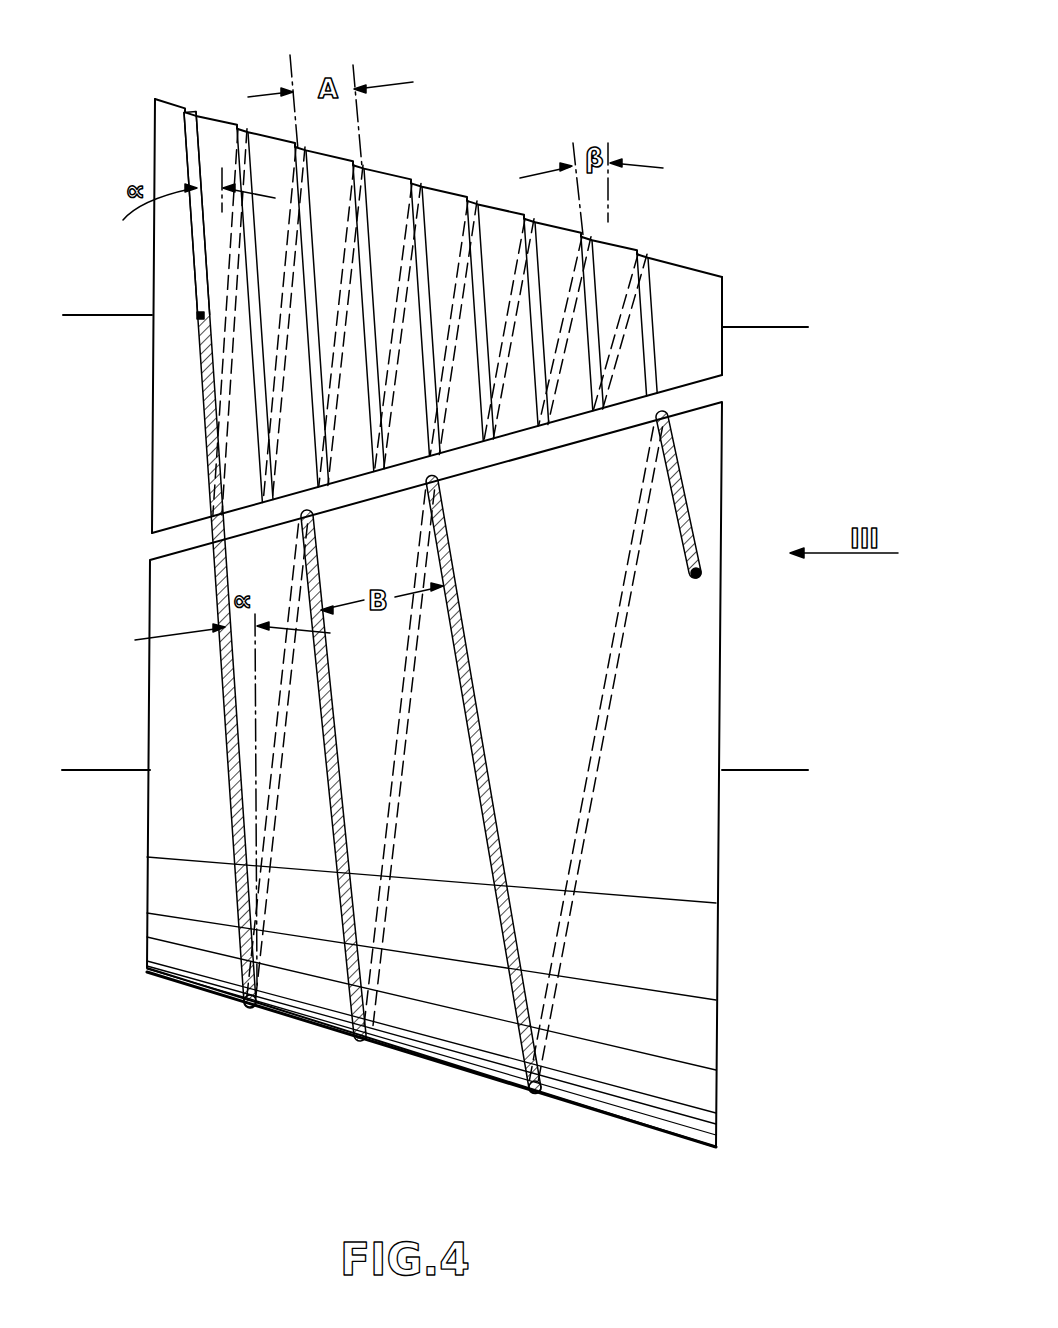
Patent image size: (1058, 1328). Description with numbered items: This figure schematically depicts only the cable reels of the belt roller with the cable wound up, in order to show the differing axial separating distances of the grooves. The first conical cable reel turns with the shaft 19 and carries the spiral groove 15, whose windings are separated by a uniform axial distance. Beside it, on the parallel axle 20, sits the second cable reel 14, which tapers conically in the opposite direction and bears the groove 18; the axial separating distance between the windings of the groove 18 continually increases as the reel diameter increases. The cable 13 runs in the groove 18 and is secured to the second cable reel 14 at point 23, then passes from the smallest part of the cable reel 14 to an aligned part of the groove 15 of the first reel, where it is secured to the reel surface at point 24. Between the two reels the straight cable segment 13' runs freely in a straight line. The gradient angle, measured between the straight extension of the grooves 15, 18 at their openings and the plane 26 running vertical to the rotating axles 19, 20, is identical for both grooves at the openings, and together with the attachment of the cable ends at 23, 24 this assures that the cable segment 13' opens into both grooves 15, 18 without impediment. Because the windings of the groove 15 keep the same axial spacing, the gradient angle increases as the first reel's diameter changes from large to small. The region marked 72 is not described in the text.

The cable 13 is at (314, 603).
The straight cable segment 13' is at (138, 341).
The second cable reel 14 is at (703, 995).
The spiral groove 15 is at (243, 126).
The groove 18 is at (249, 985).
The shaft 19 is at (83, 315).
The parallel axle 20 is at (97, 750).
The attachment point 23 is at (700, 572).
The attachment point 24 is at (200, 316).
The plane 26 is at (221, 237).
The panel end portion 72 is at (687, 275).